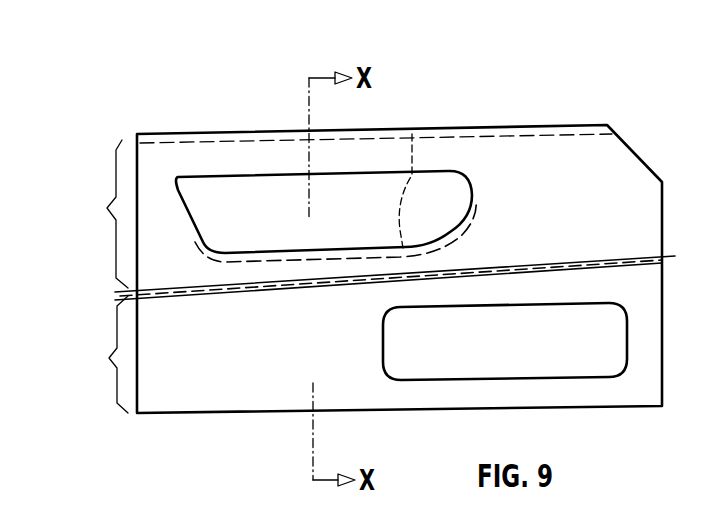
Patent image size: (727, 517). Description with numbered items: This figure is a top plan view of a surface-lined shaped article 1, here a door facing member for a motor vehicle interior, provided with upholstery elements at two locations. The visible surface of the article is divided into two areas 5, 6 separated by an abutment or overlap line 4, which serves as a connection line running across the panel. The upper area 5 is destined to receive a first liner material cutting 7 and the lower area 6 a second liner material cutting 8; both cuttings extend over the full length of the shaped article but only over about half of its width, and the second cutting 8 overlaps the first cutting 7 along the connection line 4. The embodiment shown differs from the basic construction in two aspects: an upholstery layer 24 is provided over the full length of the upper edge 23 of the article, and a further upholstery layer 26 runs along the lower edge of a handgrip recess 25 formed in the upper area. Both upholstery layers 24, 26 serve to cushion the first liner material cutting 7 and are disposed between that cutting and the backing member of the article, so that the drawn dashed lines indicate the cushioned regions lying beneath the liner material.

The surface-lined shaped article 1 is at (557, 127).
The abutment or overlap line 4 is at (128, 300).
The first area 5 is at (110, 214).
The second area 6 is at (110, 354).
The first liner material cutting 7 is at (576, 224).
The second liner material cutting 8 is at (265, 373).
The upper edge 23 is at (241, 133).
The upholstery layer 24 is at (455, 138).
The handgrip recess 25 is at (262, 229).
The further upholstery layer 26 is at (403, 254).